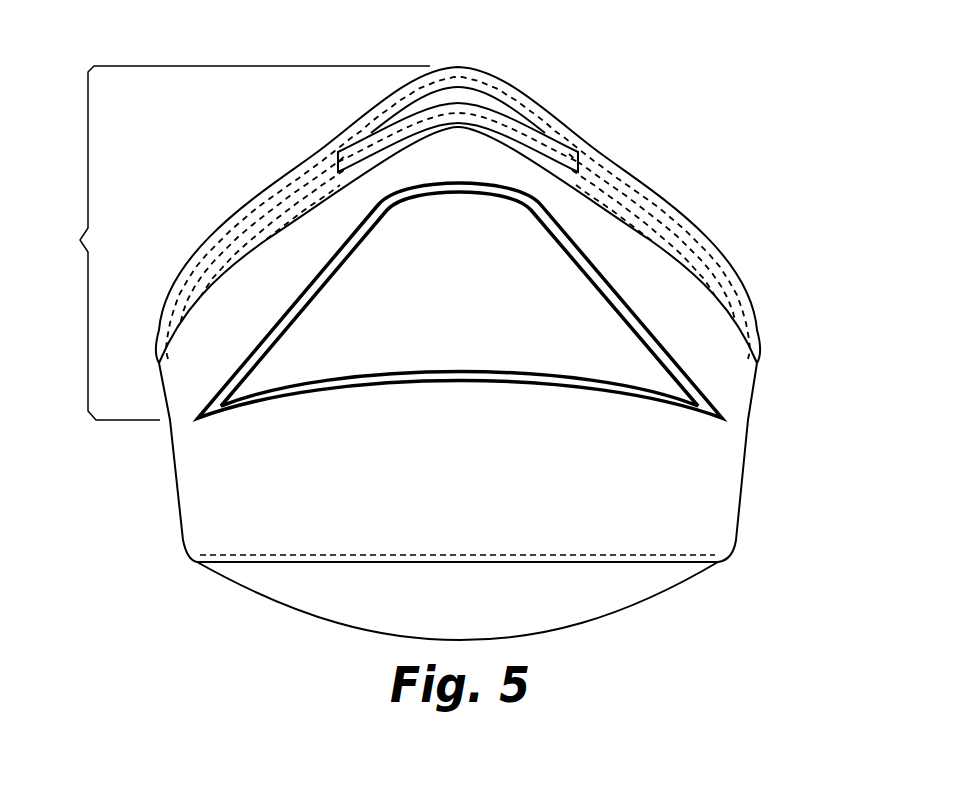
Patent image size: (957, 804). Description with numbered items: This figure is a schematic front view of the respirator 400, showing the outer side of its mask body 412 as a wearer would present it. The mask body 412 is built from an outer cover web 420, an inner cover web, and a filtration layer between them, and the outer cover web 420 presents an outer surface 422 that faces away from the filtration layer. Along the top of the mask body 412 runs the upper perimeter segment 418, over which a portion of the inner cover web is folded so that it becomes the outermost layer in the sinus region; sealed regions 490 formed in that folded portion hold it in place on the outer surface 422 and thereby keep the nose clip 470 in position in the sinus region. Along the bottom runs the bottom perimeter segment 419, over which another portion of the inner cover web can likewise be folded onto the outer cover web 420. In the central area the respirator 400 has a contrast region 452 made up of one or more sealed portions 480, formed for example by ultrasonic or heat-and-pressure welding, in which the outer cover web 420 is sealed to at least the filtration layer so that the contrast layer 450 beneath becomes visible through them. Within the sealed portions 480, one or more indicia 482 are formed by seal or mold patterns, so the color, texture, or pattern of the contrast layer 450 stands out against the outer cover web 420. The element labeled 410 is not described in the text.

The respirator 400 is at (660, 50).
The upper portion of mask body 410 is at (258, 163).
The mask body 412 is at (686, 187).
The upper perimeter segment 418 is at (318, 150).
The bottom perimeter segment 419 is at (277, 600).
The outer cover web 420 is at (718, 507).
The outer surface 422 is at (193, 477).
The contrast layer 450 is at (637, 317).
The contrast region 452 is at (230, 243).
The nose clip 470 is at (458, 92).
The sealed portions 480 is at (695, 364).
The indicia 482 is at (510, 350).
The sealed regions 490 is at (212, 228).